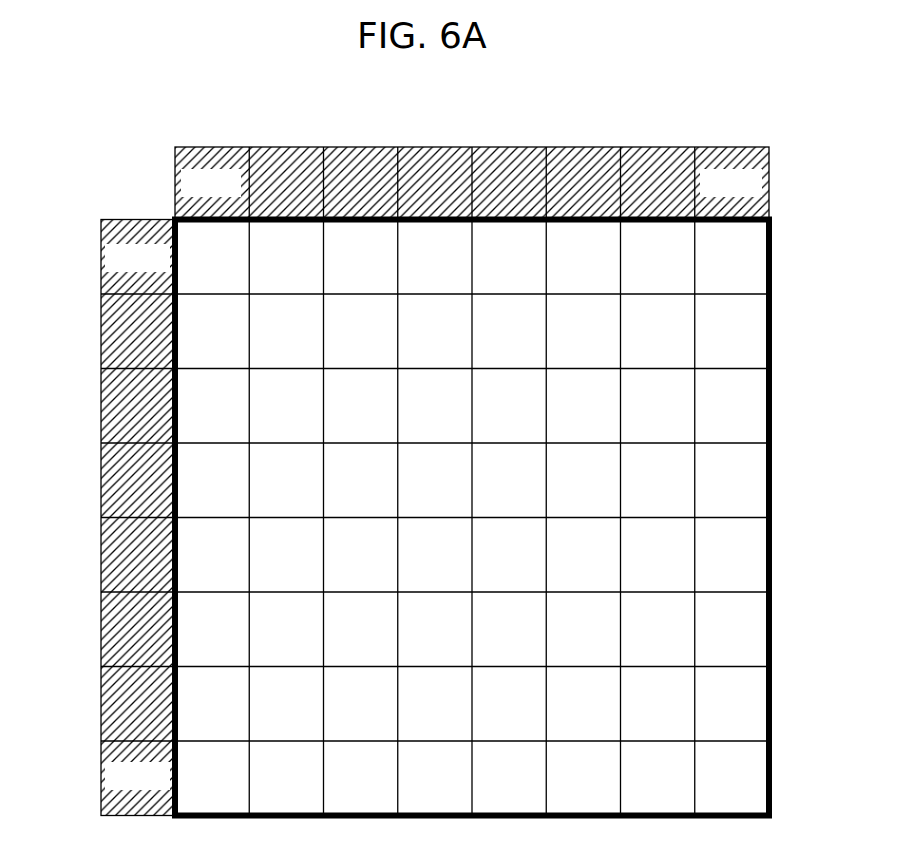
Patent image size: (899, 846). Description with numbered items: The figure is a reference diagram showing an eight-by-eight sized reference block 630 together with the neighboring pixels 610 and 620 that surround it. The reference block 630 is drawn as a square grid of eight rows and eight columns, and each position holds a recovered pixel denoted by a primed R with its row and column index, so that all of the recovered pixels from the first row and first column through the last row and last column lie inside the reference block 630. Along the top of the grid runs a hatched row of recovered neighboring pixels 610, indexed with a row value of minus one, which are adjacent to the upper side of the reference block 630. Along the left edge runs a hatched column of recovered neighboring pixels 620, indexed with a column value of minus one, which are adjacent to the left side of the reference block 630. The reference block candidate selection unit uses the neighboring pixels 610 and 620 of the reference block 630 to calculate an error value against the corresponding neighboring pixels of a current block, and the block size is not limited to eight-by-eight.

The neighboring pixels 610 is at (771, 184).
The neighboring pixels 620 is at (100, 703).
The reference block 630 is at (772, 778).